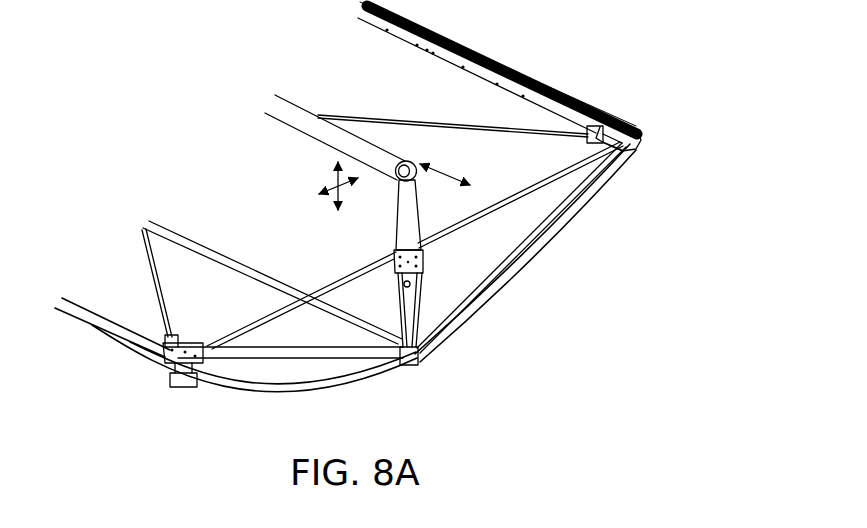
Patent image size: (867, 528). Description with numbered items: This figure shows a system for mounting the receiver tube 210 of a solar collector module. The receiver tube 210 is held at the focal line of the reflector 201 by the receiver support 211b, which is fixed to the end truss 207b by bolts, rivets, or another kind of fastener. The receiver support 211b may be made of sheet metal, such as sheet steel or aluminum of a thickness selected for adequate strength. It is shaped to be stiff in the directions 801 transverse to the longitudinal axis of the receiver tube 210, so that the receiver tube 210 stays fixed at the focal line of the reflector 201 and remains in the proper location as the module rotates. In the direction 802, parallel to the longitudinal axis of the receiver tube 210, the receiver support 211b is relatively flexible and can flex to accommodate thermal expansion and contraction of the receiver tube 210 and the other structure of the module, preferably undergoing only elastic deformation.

The receiver tube 210 is at (287, 110).
The directions transverse to the longitudinal axis of the receiver tube 801 is at (330, 180).
The direction parallel to the longitudinal axis of the receiver tube 802 is at (446, 178).
The receiver support 211b is at (405, 230).
The end truss 207b is at (540, 183).
The reflector 201 is at (485, 302).